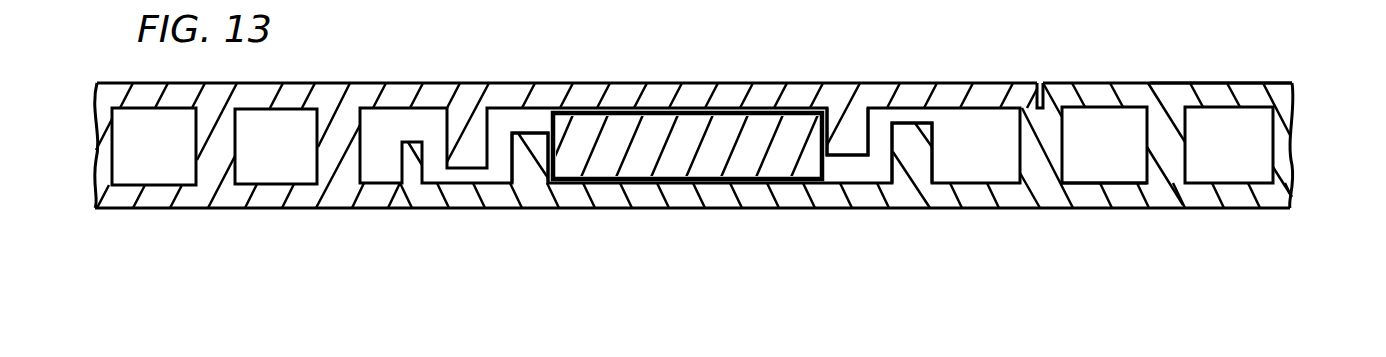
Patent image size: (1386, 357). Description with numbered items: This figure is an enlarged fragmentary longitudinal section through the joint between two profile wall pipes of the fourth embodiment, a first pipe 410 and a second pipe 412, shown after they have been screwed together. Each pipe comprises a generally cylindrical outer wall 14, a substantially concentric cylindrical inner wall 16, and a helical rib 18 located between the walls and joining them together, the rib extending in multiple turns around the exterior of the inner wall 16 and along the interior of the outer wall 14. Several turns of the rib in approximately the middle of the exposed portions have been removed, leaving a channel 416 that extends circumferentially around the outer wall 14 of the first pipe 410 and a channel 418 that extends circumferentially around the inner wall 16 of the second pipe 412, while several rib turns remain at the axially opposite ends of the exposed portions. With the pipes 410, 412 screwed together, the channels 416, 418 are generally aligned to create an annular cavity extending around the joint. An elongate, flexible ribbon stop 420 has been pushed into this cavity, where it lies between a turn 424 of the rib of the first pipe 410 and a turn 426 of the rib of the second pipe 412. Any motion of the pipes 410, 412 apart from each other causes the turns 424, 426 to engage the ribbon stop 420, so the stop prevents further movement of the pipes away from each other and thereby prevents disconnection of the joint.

The first pipe 410 is at (186, 78).
The second pipe 412 is at (1236, 76).
The outer wall 14 is at (284, 112).
The inner wall 16 is at (1106, 186).
The helical rib 18 is at (180, 148).
The channel 416 is at (505, 112).
The channel 418 is at (852, 185).
The ribbon stop 420 is at (662, 168).
The turn of the rib of the first pipe 424 is at (872, 116).
The turn of the rib of the second pipe 426 is at (543, 128).